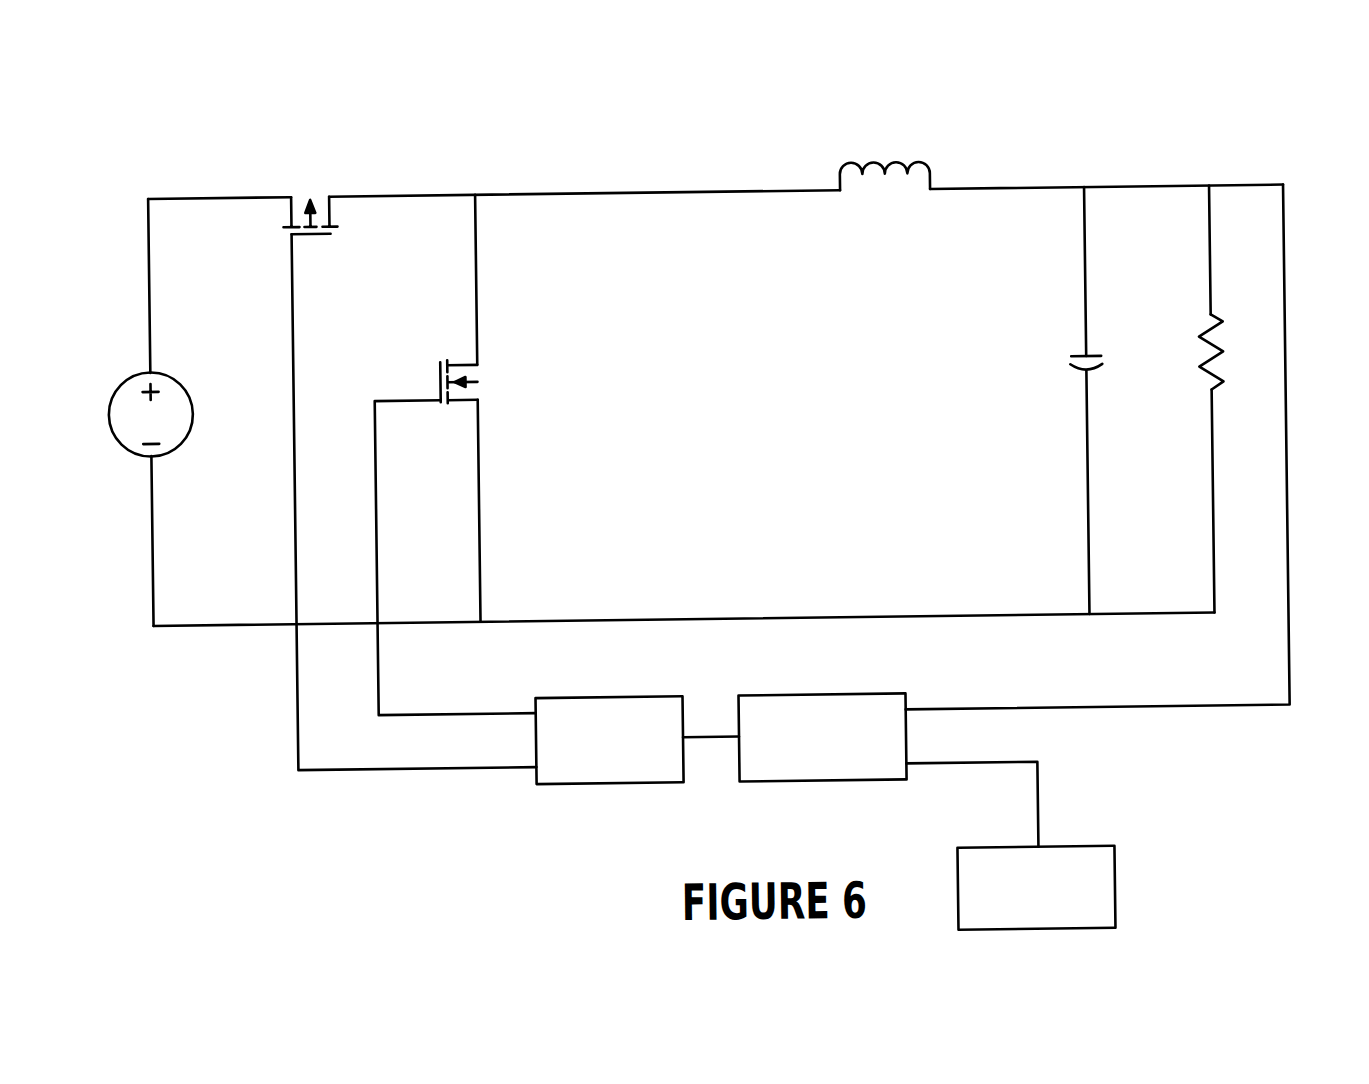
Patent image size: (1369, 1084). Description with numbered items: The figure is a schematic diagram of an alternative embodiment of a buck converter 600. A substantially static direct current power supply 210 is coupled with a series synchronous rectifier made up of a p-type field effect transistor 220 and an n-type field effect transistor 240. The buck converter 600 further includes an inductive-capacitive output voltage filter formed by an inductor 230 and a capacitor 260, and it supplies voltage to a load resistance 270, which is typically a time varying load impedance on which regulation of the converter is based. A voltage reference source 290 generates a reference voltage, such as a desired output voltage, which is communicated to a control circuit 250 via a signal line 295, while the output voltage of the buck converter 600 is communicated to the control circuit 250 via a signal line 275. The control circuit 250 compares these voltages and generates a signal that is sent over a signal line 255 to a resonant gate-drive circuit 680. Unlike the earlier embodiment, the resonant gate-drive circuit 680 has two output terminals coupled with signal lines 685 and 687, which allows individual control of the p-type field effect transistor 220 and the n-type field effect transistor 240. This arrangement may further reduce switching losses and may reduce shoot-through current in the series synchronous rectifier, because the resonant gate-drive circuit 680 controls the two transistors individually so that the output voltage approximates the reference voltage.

The buck converter 600 is at (706, 120).
The power supply 210 is at (191, 394).
The p-type field effect transistor 220 is at (322, 183).
The inductor 230 is at (906, 168).
The n-type field effect transistor 240 is at (484, 385).
The control circuit 250 is at (820, 696).
The signal line 255 is at (702, 737).
The capacitor 260 is at (1085, 358).
The load resistance 270 is at (1207, 328).
The signal line 275 is at (1288, 302).
The voltage reference source 290 is at (1112, 888).
The signal line 295 is at (1036, 780).
The resonant gate-drive circuit 680 is at (608, 693).
The signal line 685 is at (295, 715).
The signal line 687 is at (377, 669).